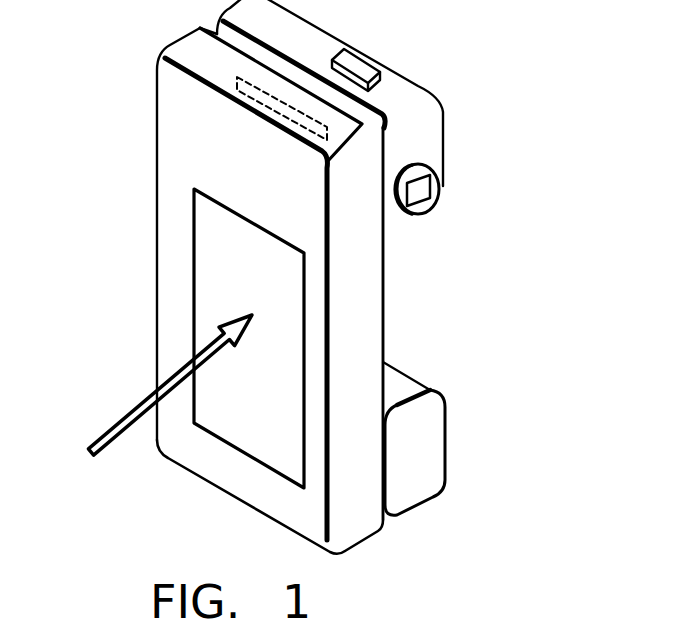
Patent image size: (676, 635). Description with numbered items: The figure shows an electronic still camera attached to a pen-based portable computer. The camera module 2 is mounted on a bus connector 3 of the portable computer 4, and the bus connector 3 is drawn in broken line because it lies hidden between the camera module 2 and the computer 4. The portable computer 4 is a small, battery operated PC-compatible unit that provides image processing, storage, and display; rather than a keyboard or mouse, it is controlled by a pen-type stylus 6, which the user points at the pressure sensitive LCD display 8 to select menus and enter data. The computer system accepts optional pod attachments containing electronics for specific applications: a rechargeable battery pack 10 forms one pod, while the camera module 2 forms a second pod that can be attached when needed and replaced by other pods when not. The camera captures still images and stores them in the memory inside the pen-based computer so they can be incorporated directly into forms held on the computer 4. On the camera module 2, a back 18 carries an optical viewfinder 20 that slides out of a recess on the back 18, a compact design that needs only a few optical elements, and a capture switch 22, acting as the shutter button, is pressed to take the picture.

The camera module 2 is at (298, 277).
The bus connector 3 is at (237, 102).
The portable computer 4 is at (383, 302).
The pen-type stylus 6 is at (117, 416).
The pressure sensitive LCD display 8 is at (124, 249).
The rechargeable battery pack 10 is at (475, 453).
The back 18 is at (427, 122).
The optical viewfinder 20 is at (425, 170).
The capture switch 22 is at (372, 64).